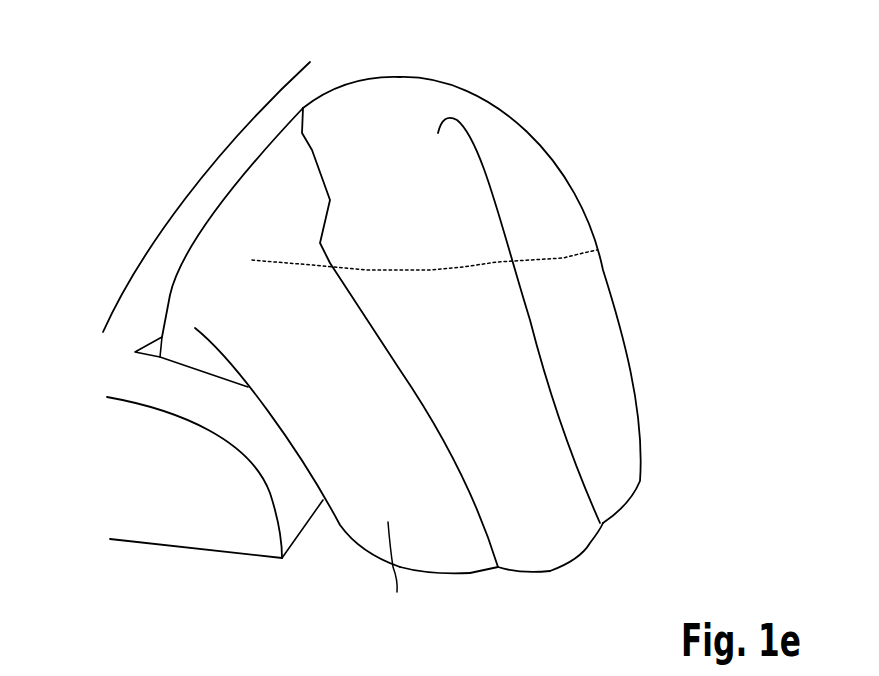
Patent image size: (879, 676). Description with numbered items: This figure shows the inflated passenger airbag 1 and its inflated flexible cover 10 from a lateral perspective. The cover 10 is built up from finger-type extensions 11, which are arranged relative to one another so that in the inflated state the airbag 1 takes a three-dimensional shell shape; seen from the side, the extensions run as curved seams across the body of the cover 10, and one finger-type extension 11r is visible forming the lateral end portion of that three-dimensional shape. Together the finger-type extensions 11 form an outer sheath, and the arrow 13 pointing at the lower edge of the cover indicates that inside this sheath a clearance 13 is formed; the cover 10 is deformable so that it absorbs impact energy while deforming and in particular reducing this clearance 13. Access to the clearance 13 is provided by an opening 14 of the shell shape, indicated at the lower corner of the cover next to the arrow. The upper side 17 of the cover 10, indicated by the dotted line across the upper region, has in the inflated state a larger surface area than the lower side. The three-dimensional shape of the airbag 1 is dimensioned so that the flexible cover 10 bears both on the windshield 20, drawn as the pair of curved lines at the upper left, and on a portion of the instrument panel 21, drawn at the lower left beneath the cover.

The airbag 1 is at (630, 167).
The flexible cover 10 is at (568, 213).
The finger-type extensions 11 is at (607, 332).
The finger-type extension 11r is at (400, 576).
The clearance 13 is at (513, 592).
The opening 14 is at (596, 579).
The upper side 17 is at (590, 277).
The windshield 20 is at (208, 162).
The instrument panel 21 is at (290, 523).